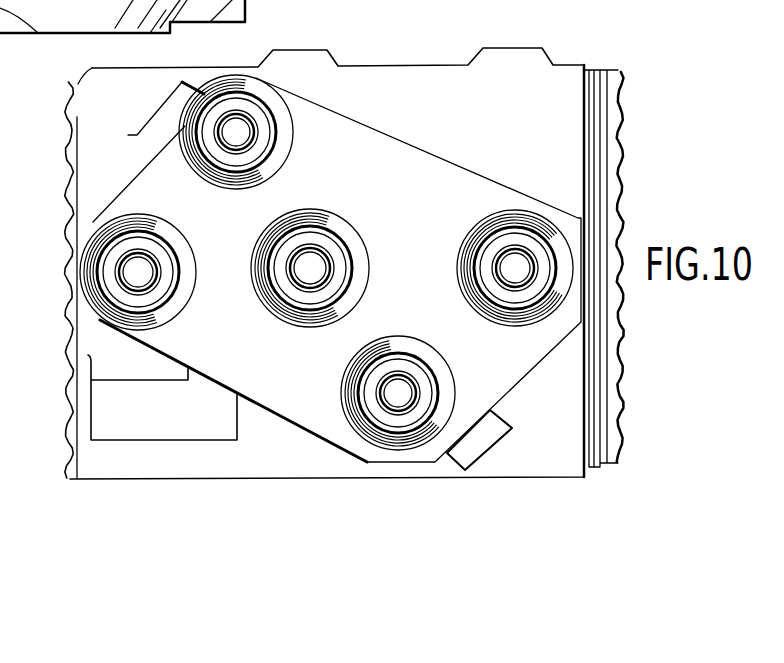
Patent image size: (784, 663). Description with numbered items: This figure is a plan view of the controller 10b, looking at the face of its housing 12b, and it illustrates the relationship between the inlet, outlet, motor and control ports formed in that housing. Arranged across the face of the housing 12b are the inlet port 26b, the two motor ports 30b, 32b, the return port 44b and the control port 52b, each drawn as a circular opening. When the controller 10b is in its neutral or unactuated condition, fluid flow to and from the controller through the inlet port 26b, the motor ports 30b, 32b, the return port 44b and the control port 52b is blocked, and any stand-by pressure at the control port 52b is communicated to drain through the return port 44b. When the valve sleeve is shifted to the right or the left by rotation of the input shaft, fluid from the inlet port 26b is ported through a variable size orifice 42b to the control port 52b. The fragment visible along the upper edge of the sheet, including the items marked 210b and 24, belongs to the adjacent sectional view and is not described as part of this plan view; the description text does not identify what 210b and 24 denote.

The controller 10b is at (637, 120).
The housing 12b is at (497, 112).
The inlet port 26b is at (480, 222).
The motor port 30b is at (283, 157).
The motor port 32b is at (410, 322).
The return port 44b is at (300, 325).
The control port 52b is at (183, 240).
The valve element 210b is at (122, 16).
The variable size orifice 42b is at (128, 14).
The housing 24 is at (207, 7).